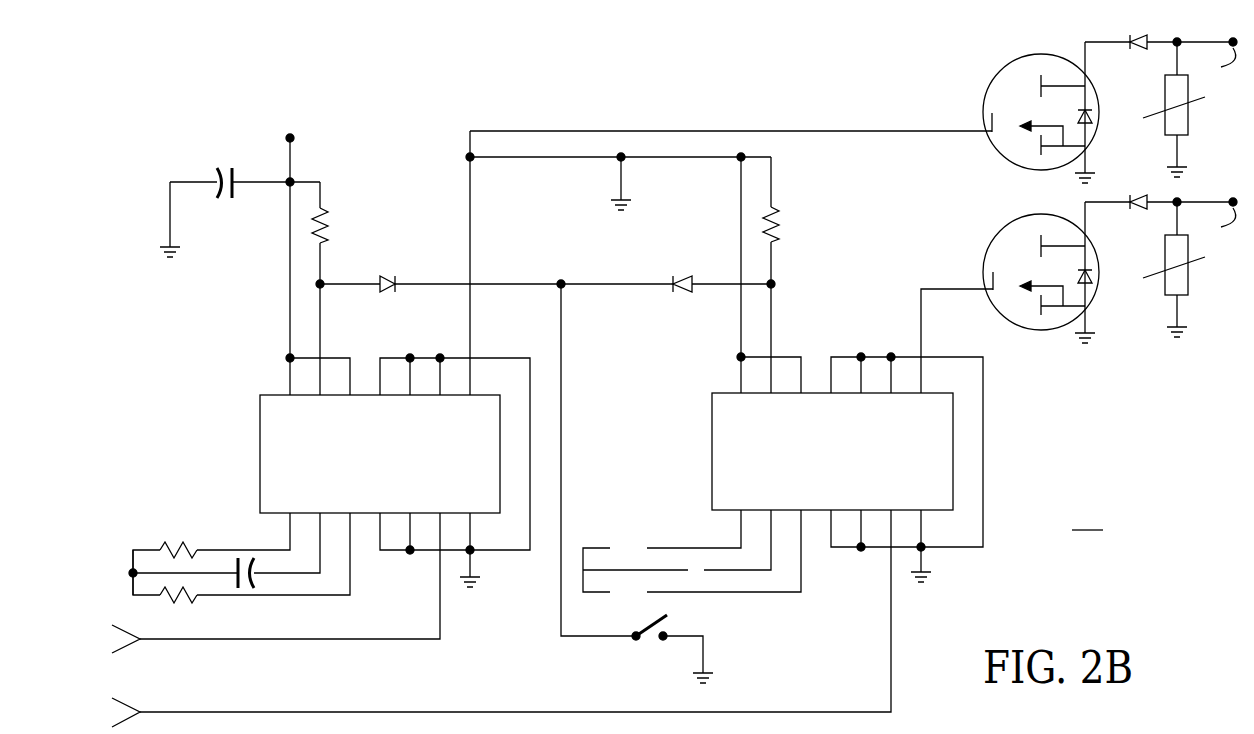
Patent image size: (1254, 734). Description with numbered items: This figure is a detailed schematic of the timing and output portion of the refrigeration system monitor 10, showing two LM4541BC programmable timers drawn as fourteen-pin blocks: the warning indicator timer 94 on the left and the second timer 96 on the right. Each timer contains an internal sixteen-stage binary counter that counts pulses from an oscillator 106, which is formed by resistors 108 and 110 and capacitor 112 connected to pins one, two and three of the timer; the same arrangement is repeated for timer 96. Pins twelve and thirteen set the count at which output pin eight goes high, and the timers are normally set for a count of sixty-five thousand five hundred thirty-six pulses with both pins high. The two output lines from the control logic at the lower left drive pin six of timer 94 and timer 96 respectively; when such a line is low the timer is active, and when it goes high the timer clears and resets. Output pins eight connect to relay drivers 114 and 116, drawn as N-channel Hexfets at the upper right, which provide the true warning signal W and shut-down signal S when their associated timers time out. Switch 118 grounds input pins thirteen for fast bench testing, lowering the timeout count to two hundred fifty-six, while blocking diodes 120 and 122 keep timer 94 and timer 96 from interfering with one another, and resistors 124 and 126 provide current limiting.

The refrigeration system monitor 10 is at (651, 381).
The warning indicator timer 94 is at (260, 467).
The second timer 96 is at (712, 452).
The oscillator 106 is at (108, 584).
The resistor 108 is at (183, 542).
The resistor 110 is at (188, 601).
The capacitor 112 is at (260, 600).
The relay driver 114 is at (988, 90).
The relay driver 116 is at (988, 250).
The switch 118 is at (668, 618).
The blocking diode 120 is at (385, 275).
The blocking diode 122 is at (690, 272).
The resistor 124 is at (323, 222).
The resistor 126 is at (776, 218).